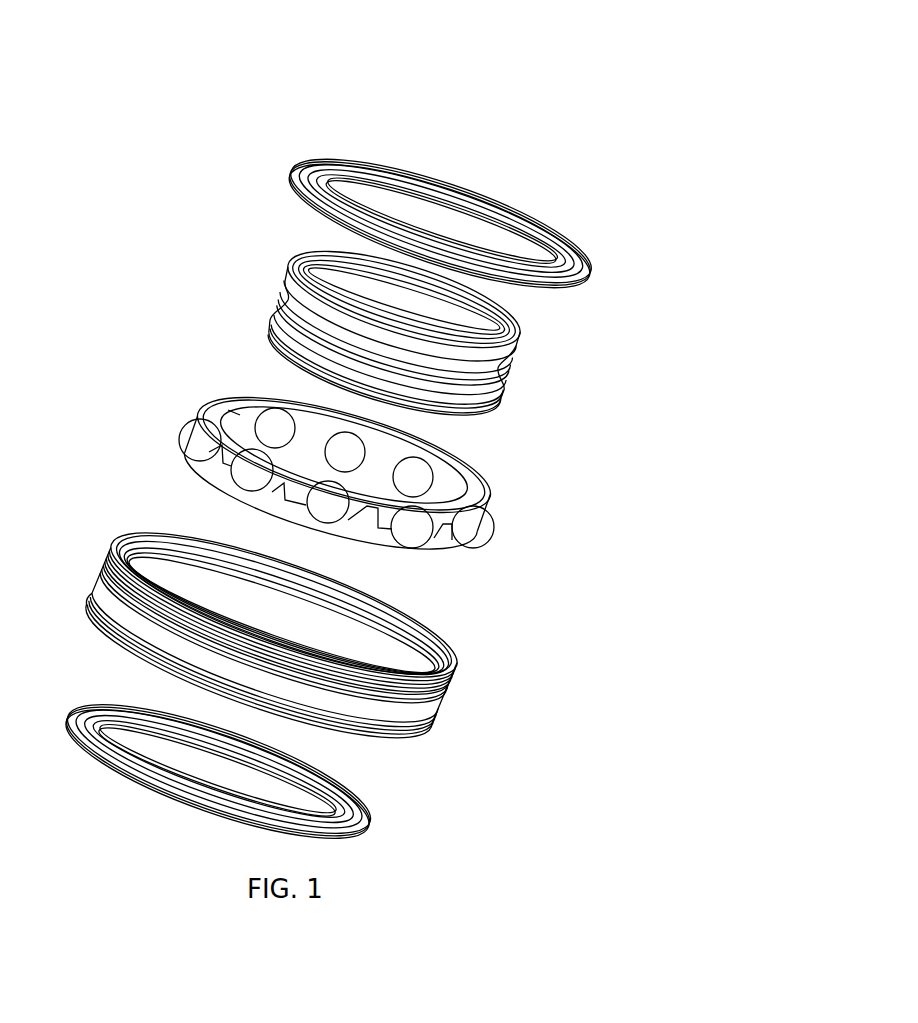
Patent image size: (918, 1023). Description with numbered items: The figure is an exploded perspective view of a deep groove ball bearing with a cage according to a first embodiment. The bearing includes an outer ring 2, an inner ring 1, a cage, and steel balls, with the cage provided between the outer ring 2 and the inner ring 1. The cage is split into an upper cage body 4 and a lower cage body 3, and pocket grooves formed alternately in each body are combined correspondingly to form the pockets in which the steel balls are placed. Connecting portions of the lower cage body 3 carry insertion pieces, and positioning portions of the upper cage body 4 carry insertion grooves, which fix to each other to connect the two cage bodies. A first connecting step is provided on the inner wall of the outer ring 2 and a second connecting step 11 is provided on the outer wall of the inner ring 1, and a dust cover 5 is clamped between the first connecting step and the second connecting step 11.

The inner ring 1 is at (536, 271).
The second connecting step 11 is at (513, 332).
The outer ring 2 is at (450, 685).
The lower cage body 3 is at (480, 541).
The upper cage body 4 is at (493, 449).
The dust cover 5 is at (572, 250).